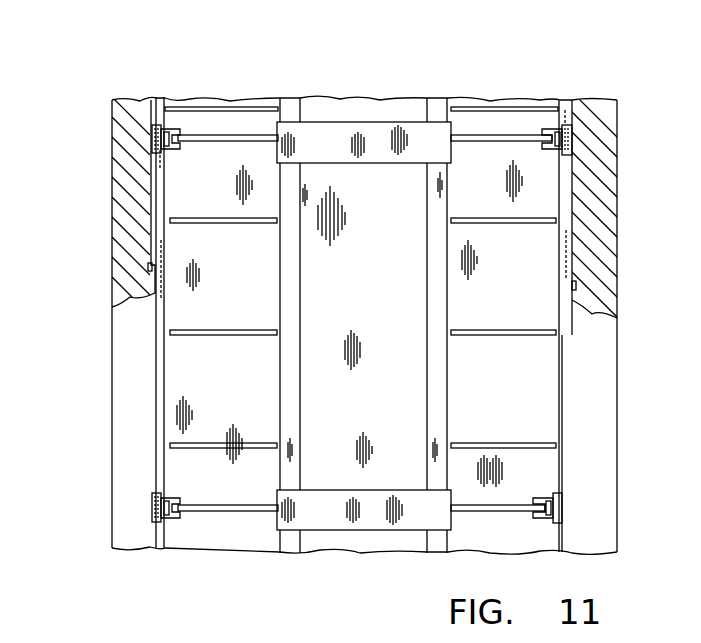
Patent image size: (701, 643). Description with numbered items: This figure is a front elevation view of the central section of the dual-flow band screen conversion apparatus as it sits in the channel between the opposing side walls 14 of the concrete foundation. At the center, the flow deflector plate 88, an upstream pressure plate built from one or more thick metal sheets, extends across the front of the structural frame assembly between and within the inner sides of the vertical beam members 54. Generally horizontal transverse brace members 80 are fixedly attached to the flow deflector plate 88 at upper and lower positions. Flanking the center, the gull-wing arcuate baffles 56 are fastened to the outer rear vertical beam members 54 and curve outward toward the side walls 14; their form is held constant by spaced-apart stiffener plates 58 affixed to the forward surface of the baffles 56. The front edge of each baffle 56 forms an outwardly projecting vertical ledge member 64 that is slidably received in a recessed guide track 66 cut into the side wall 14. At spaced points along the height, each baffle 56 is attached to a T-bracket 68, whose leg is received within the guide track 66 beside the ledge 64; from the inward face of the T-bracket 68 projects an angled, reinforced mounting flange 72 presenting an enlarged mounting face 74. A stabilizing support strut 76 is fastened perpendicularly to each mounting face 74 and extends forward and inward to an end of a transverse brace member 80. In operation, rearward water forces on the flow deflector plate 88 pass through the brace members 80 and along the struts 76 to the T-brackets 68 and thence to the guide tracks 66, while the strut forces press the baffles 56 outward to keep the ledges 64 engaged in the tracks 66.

The side walls 14 is at (117, 195).
The vertical beam members 54 is at (283, 100).
The arcuate baffles 56 is at (517, 283).
The stiffener plates 58 is at (249, 223).
The vertical ledge member 64 is at (160, 230).
The recessed guide track 66 is at (150, 266).
The T-bracket 68 is at (572, 142).
The mounting flange 72 is at (552, 118).
The mounting face 74 is at (573, 156).
The stabilizing support strut 76 is at (238, 135).
The transverse brace member 80 is at (365, 135).
The flow deflector plate 88 is at (378, 284).